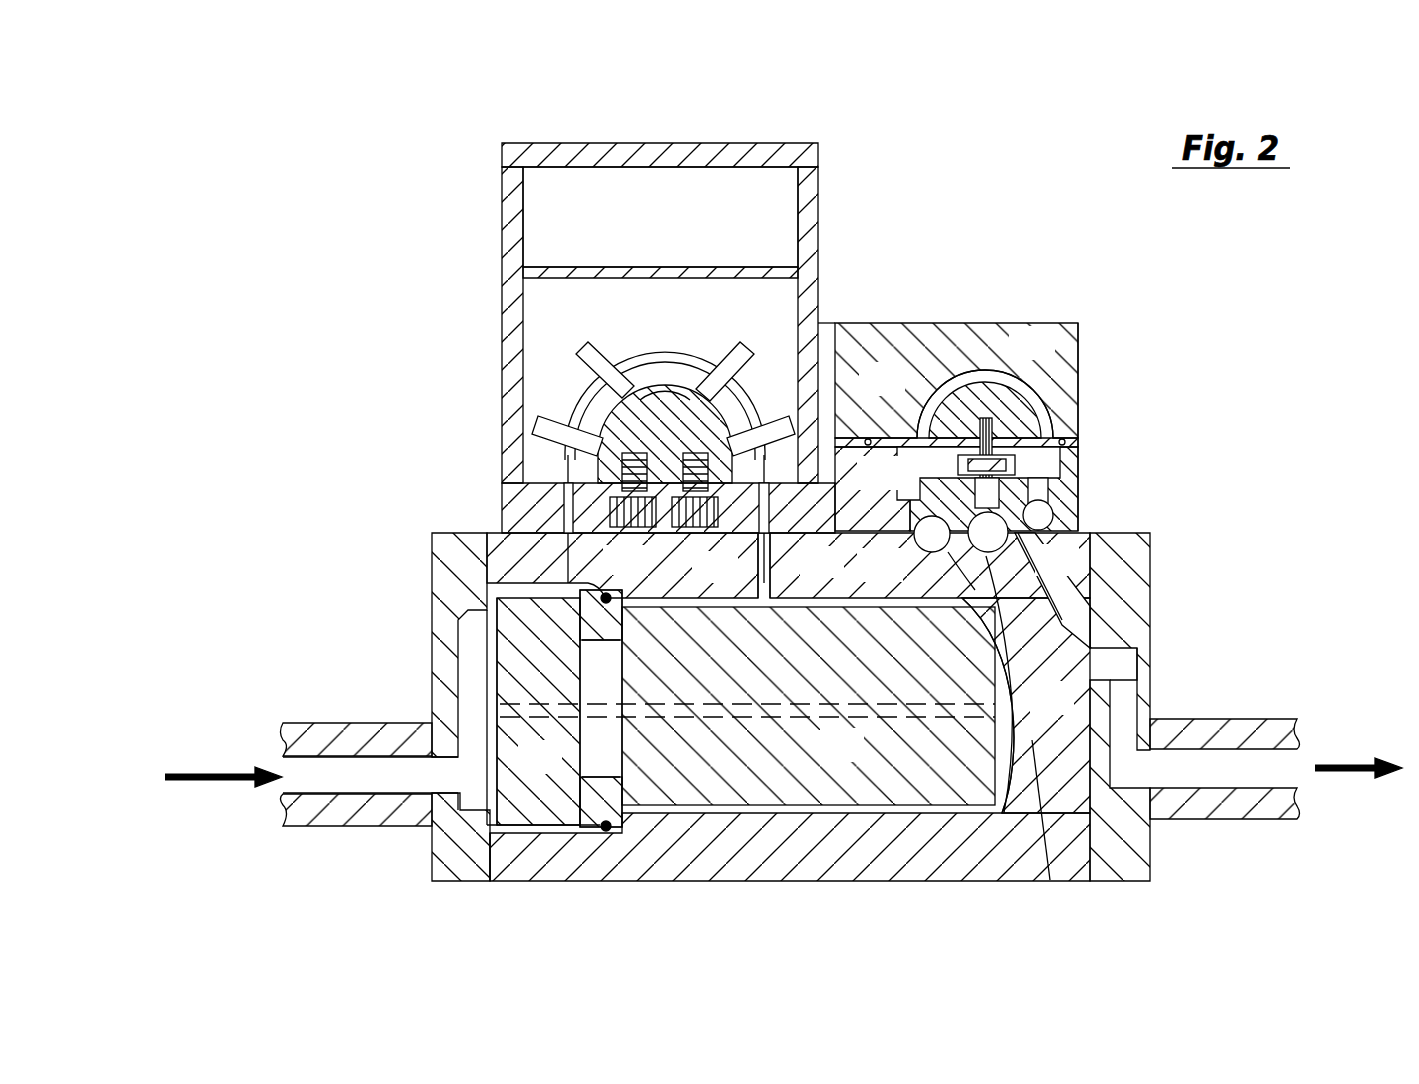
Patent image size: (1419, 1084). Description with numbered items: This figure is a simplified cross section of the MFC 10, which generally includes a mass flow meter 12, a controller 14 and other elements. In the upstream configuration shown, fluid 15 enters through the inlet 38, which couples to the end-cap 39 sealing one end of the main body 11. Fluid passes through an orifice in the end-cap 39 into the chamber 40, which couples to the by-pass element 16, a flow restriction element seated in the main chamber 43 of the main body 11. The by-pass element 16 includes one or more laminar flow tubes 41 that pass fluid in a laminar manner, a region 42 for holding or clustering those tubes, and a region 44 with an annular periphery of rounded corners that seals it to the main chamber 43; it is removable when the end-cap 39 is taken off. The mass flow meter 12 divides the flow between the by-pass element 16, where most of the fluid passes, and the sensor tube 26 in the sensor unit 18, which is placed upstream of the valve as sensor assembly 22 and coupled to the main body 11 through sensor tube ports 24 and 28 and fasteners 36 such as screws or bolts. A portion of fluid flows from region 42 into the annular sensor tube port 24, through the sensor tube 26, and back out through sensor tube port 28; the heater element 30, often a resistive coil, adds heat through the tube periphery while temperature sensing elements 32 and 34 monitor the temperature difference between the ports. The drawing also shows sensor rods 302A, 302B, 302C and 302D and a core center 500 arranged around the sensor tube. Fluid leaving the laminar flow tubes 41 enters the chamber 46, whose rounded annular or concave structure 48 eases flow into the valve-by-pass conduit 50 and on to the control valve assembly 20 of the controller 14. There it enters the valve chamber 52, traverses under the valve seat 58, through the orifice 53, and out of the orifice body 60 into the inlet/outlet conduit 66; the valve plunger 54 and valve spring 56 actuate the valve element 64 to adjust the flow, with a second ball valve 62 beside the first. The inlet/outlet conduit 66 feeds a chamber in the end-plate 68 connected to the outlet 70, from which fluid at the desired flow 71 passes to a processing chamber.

The MFC 10 is at (963, 195).
The main body 11 is at (862, 852).
The mass flow meter 12 is at (405, 660).
The controller 14 is at (977, 300).
The fluid flow 15 is at (202, 775).
The by-pass element 16 is at (826, 762).
The sensor unit 18 is at (540, 325).
The control valve assembly 20 is at (1080, 400).
The sensor assembly 22 is at (644, 244).
The sensor tube port 24 is at (572, 556).
The sensor tube 26 is at (562, 457).
The sensor tube port 28 is at (768, 562).
The heater element 30 is at (695, 360).
The temperature sensing element 32 is at (585, 398).
The temperature sensing element 34 is at (690, 350).
The fasteners 36 is at (648, 530).
The inlet 38 is at (372, 794).
The end-cap 39 is at (455, 592).
The chamber 40 is at (492, 772).
The laminar flow tube 41 is at (932, 712).
The region 42 is at (524, 774).
The main chamber 43 is at (712, 815).
The region 44 is at (612, 835).
The chamber 46 is at (788, 748).
The annular or concave structure 48 is at (1050, 880).
The valve-by-pass conduit 50 is at (935, 558).
The valve chamber 52 is at (935, 440).
The orifice 53 is at (955, 500).
The valve plunger 54 is at (995, 445).
The valve spring 56 is at (1085, 458).
The valve seat 58 is at (1016, 470).
The orifice body 60 is at (1052, 520).
The ball valve 62 is at (1008, 540).
The valve element 64 is at (992, 552).
The inlet/outlet conduit 66 is at (1046, 640).
The end-plate 68 is at (1130, 850).
The outlet 70 is at (1268, 805).
The desired flow 71 is at (1345, 755).
The sensor rod 302A is at (778, 418).
The sensor rod 302B is at (748, 348).
The sensor rod 302C is at (583, 345).
The sensor rod 302D is at (535, 424).
The core center 500 is at (668, 402).